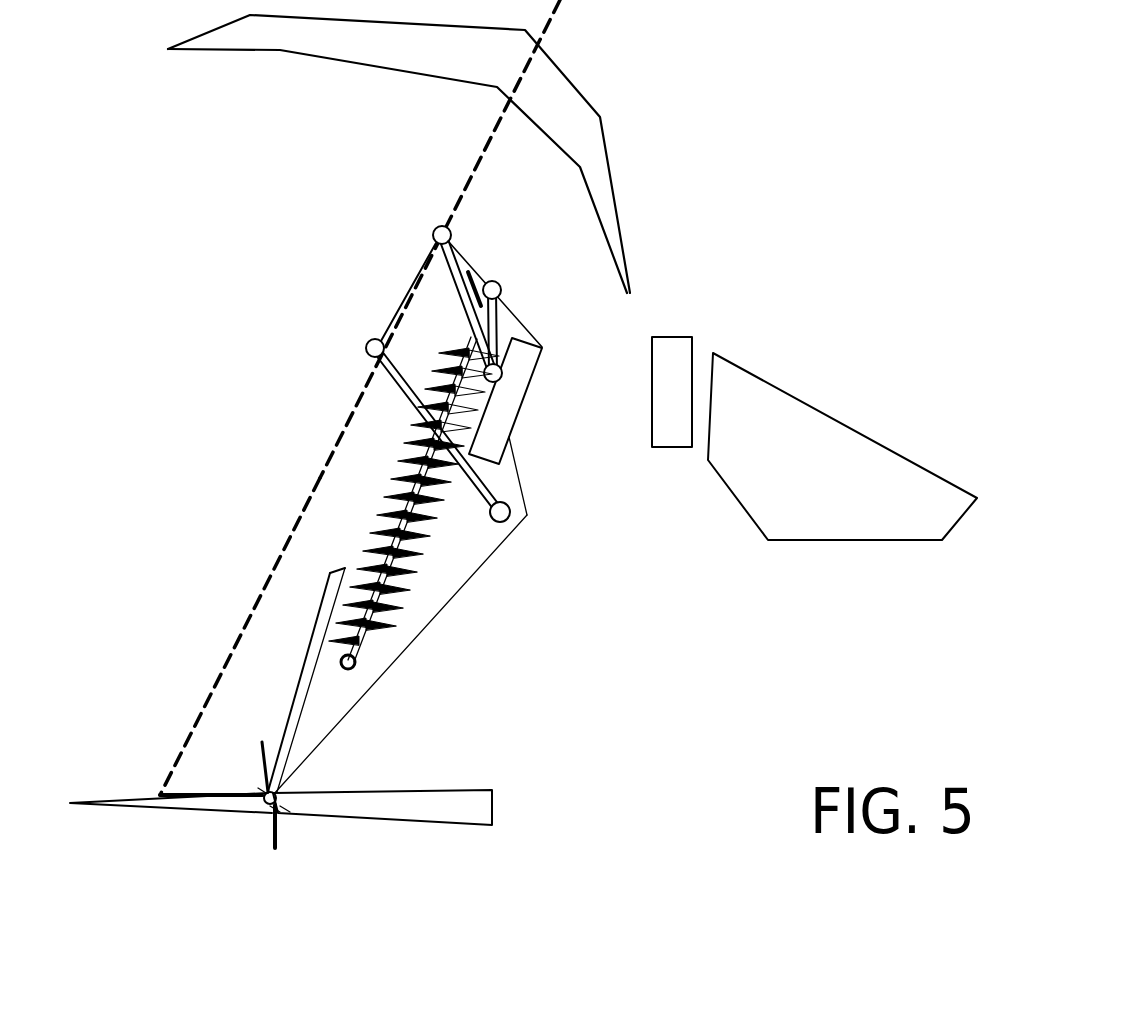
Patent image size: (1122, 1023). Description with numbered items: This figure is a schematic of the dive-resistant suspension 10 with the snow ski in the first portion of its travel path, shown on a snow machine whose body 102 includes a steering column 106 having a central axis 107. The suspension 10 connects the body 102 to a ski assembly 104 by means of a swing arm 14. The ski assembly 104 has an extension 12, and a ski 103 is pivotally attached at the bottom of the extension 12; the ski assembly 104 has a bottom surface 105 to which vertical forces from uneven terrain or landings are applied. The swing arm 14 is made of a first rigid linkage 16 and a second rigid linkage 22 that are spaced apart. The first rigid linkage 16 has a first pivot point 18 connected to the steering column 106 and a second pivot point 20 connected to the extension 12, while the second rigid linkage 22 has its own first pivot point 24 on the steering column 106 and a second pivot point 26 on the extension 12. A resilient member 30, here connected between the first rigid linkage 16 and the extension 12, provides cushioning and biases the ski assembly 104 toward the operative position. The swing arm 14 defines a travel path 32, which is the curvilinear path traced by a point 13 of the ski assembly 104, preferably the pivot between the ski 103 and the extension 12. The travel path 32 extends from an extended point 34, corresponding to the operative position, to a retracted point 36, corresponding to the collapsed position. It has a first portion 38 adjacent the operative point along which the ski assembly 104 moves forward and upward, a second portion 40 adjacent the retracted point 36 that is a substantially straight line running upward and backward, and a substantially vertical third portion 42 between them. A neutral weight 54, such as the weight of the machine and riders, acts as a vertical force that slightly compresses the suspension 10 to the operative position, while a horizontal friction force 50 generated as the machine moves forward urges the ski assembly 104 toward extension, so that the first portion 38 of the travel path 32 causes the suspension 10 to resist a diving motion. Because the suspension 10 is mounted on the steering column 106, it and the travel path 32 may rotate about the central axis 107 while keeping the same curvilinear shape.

The suspension 10 is at (366, 236).
The extension 12 is at (467, 563).
The point 13 is at (278, 815).
The swing arm 14 is at (433, 242).
The first rigid linkage 16 is at (500, 303).
The first pivot point 18 is at (450, 230).
The second pivot point 20 is at (537, 353).
The second rigid linkage 22 is at (482, 478).
The first pivot point 24 is at (367, 355).
The second pivot point 26 is at (513, 505).
The resilient member 30 is at (430, 515).
The travel path 32 is at (262, 752).
The extended point 34 is at (264, 798).
The retracted point 36 is at (333, 571).
The first portion 38 is at (263, 795).
The second portion 40 is at (317, 618).
The third portion 42 is at (262, 790).
The friction force 50 is at (175, 797).
The neutral weight 54 is at (272, 850).
The body 102 is at (570, 97).
The ski 103 is at (285, 812).
The ski assembly 104 is at (350, 693).
The bottom surface 105 is at (137, 803).
The steering column 106 is at (487, 137).
The central axis 107 is at (260, 597).